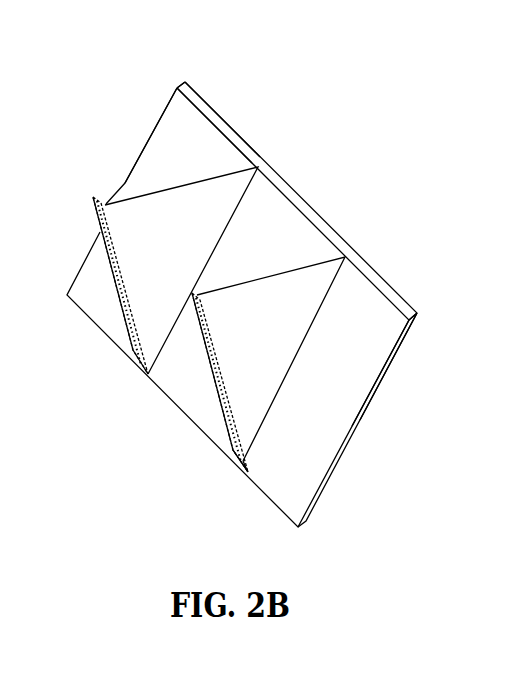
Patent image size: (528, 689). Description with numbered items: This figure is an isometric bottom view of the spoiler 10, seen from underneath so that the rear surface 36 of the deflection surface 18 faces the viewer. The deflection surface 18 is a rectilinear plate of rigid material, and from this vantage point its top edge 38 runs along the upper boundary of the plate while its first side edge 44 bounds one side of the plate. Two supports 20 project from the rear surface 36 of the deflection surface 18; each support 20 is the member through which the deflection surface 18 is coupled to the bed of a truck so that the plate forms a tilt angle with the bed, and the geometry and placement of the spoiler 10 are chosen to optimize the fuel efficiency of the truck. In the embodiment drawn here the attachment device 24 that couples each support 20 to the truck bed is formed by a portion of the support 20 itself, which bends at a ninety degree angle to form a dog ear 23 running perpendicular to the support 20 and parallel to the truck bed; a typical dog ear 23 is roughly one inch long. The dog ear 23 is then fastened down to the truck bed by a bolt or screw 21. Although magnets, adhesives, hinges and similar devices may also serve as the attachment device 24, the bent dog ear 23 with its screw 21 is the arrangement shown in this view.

The spoiler 10 is at (338, 162).
The deflection surface 18 is at (305, 225).
The support 20 is at (172, 354).
The bolt or screw 21 is at (243, 456).
The dog ear 23 is at (126, 322).
The attachment device 24 is at (99, 233).
The rear surface 36 is at (172, 138).
The top edge 38 is at (223, 123).
The first side edge 44 is at (408, 336).